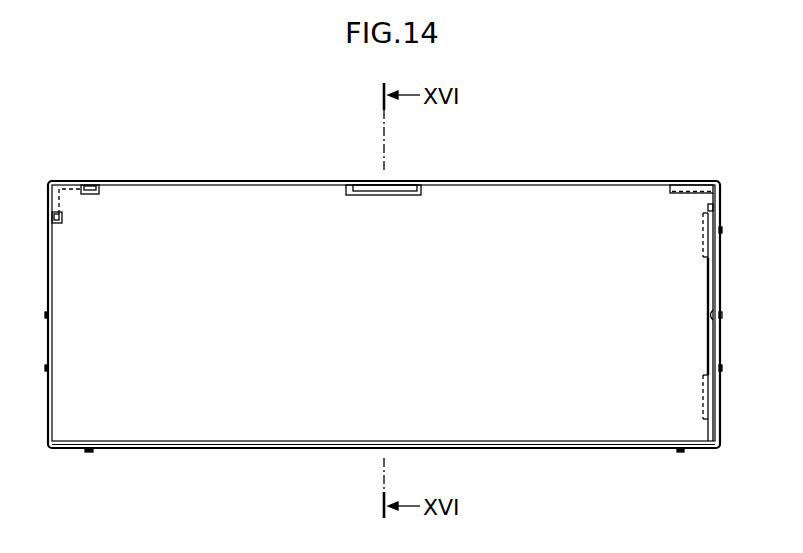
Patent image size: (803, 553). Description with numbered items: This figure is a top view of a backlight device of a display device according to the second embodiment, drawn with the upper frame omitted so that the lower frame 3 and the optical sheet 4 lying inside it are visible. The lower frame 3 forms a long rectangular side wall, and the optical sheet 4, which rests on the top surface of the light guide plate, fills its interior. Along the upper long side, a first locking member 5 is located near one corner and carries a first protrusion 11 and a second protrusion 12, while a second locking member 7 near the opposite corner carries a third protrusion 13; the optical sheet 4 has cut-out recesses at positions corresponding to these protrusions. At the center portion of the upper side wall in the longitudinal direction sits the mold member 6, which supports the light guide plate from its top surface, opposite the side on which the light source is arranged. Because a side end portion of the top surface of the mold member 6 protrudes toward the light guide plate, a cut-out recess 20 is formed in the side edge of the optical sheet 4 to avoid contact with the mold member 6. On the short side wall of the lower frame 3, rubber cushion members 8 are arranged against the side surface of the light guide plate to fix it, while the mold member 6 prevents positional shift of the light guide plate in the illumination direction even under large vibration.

The lower frame 3 is at (713, 343).
The optical sheet 4 is at (535, 218).
The first locking member 5 is at (75, 186).
The mold member 6 is at (363, 190).
The second locking member 7 is at (684, 188).
The rubber cushion member 8 is at (713, 241).
The first protrusion 11 is at (54, 218).
The second protrusion 12 is at (89, 187).
The third protrusion 13 is at (710, 207).
The cut-out recess 20 is at (417, 190).